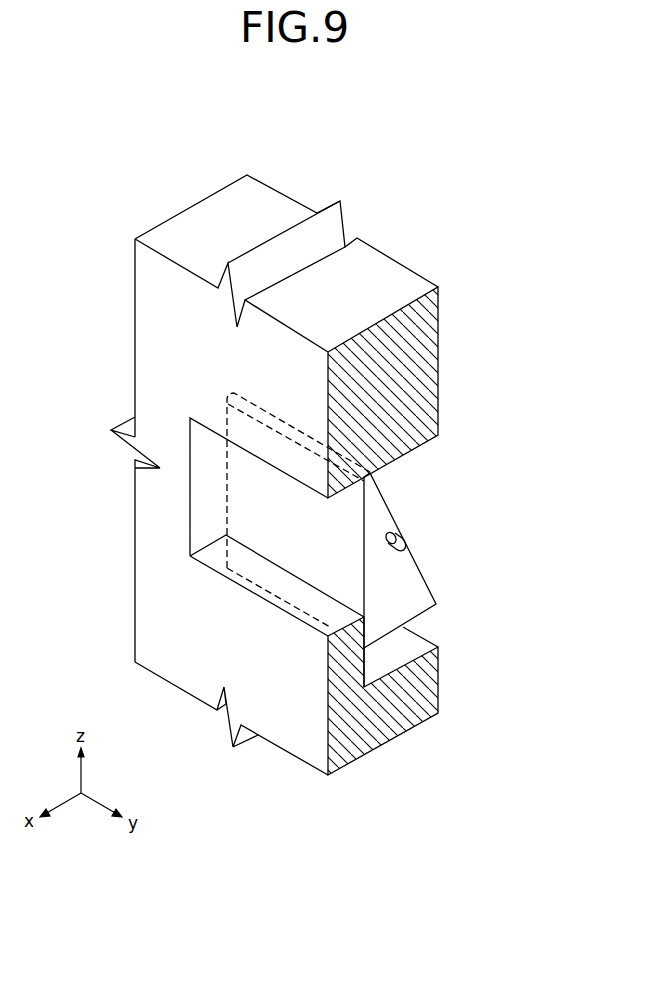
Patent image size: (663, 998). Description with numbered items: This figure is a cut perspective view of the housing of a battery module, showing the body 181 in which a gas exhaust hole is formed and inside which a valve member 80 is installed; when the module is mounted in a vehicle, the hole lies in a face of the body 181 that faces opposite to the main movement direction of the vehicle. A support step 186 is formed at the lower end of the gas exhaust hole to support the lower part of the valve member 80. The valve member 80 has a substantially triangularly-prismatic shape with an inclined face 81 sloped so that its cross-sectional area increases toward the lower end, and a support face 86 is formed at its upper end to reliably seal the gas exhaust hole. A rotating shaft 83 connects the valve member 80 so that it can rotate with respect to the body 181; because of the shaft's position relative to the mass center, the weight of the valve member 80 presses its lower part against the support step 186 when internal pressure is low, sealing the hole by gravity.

The body 181 is at (438, 358).
The support step 186 is at (345, 660).
The support face 86 is at (282, 430).
The valve member 80 is at (440, 576).
The inclined face 81 is at (390, 495).
The rotating shaft 83 is at (403, 532).